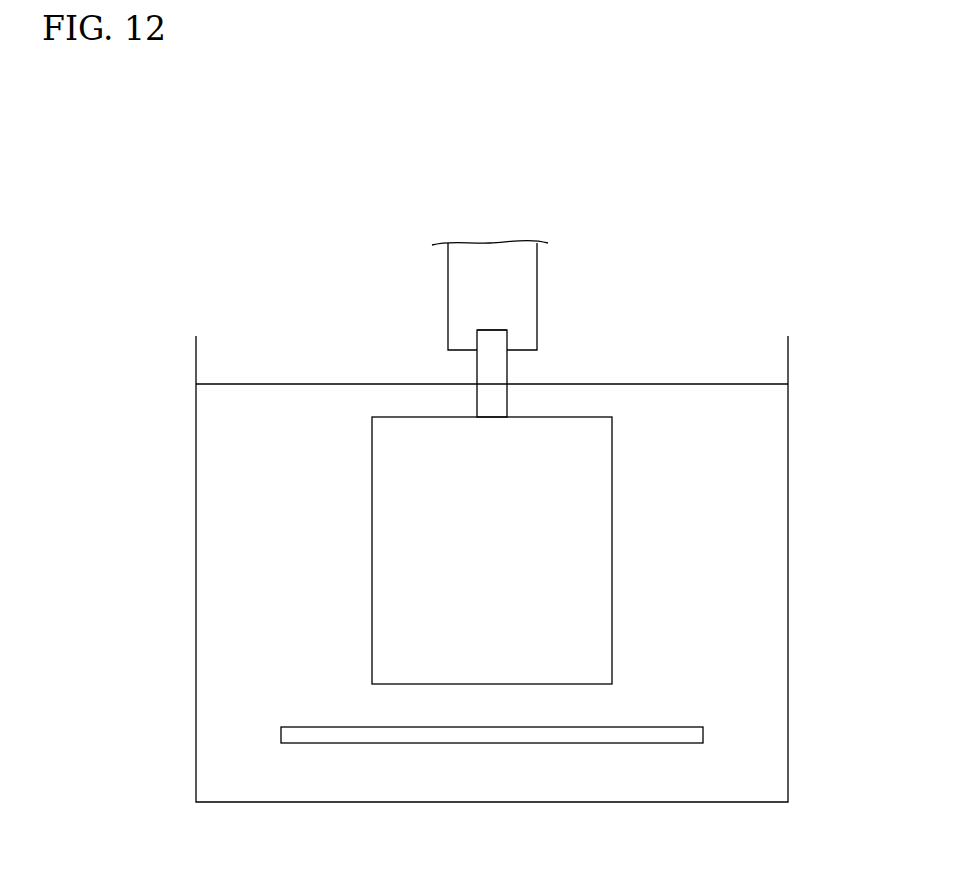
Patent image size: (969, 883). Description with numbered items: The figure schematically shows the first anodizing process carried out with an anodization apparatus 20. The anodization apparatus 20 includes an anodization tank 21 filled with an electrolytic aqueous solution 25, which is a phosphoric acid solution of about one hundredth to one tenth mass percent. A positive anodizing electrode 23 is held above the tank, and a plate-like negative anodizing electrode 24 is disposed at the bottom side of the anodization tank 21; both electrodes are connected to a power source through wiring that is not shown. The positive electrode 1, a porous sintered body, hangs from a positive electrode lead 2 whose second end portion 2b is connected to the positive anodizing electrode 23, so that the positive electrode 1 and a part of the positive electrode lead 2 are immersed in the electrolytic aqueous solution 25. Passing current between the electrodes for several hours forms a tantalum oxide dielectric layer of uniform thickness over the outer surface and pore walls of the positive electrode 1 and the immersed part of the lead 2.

The anodization apparatus 20 is at (737, 204).
The anodization tank 21 is at (789, 351).
The electrolytic aqueous solution 25 is at (288, 433).
The positive anodizing electrode 23 is at (527, 272).
The positive electrode lead 2 is at (500, 370).
The second end portion 2b is at (490, 342).
The positive electrode 1 is at (592, 540).
The negative anodizing electrode 24 is at (570, 737).